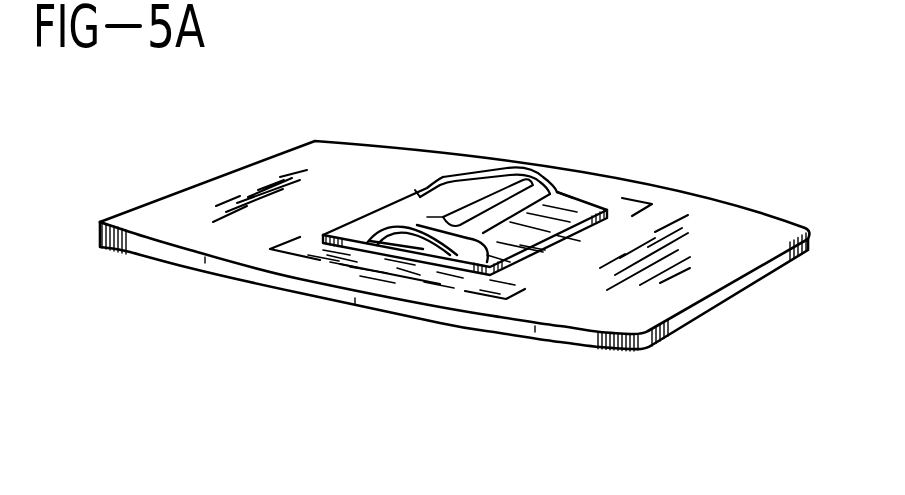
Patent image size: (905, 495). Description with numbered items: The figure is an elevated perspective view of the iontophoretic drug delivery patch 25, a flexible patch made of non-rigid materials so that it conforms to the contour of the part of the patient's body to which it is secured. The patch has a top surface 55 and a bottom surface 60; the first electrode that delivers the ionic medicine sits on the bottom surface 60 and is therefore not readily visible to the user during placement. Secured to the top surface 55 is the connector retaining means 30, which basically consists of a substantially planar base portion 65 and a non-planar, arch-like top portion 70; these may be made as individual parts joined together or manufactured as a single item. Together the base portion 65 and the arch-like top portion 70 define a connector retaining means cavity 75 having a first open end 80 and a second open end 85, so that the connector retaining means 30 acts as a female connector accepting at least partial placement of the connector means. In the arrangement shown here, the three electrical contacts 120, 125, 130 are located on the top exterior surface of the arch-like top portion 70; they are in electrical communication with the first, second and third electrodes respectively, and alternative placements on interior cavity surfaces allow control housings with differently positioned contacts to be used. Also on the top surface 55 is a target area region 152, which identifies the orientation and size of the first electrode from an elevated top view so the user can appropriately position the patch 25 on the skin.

The iontophoretic drug delivery patch 25 is at (755, 302).
The connector retaining means 30 is at (480, 258).
The top surface 55 is at (250, 192).
The bottom surface 60 is at (697, 318).
The base portion 65 is at (553, 245).
The top portion 70 is at (575, 188).
The connector retaining means cavity 75 is at (418, 248).
The first open end 80 is at (420, 245).
The second open end 85 is at (540, 165).
The electrical contact 120 is at (467, 195).
The electrical contact 125 is at (427, 217).
The electrical contact 130 is at (558, 165).
The target area region 152 is at (735, 195).